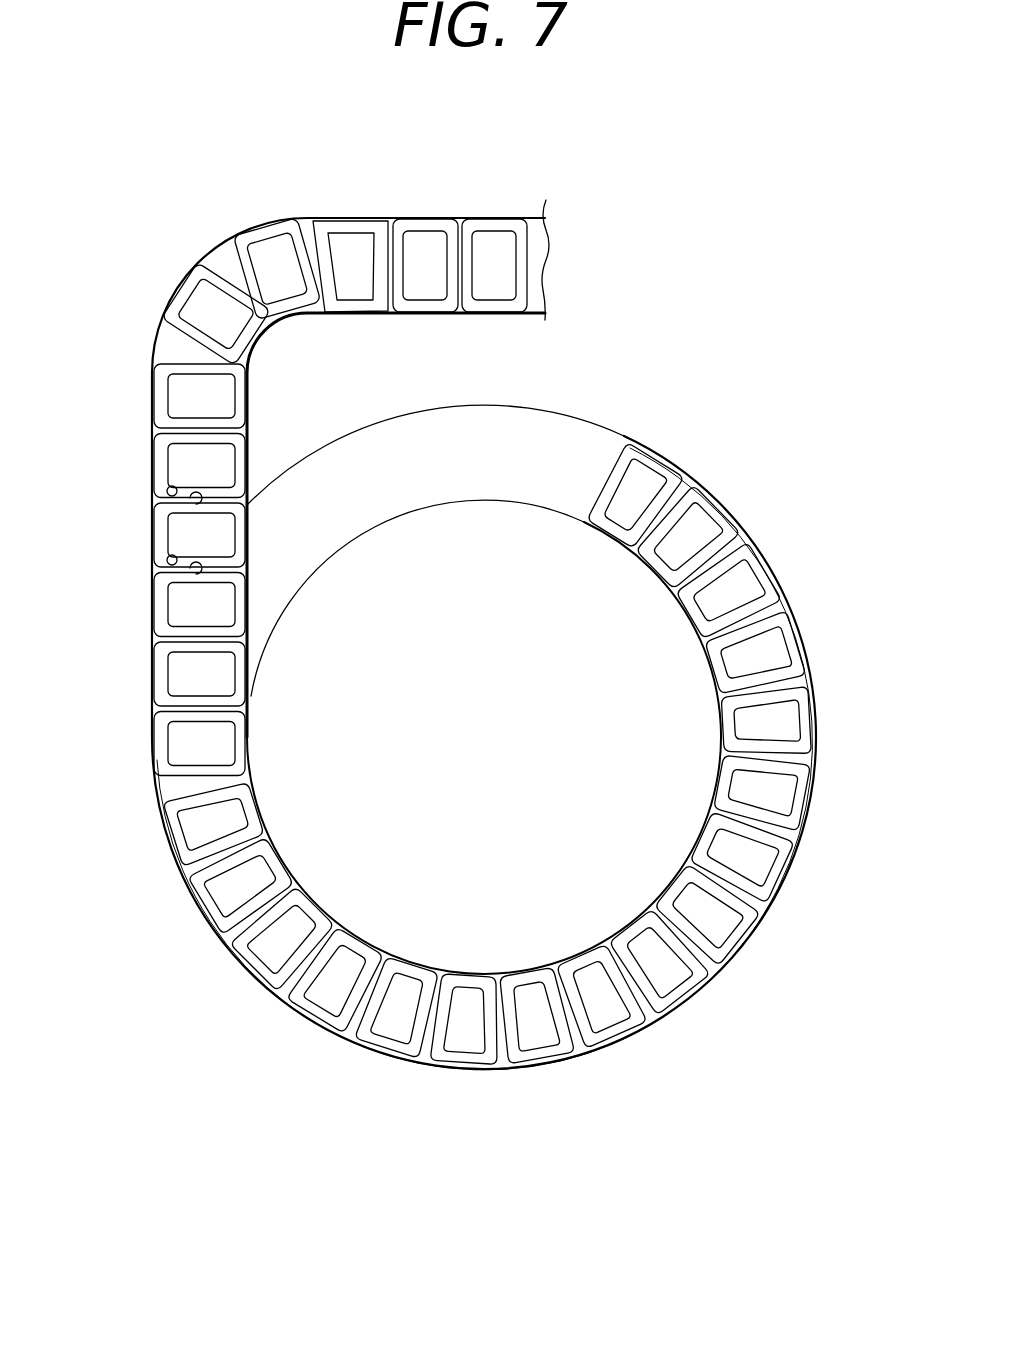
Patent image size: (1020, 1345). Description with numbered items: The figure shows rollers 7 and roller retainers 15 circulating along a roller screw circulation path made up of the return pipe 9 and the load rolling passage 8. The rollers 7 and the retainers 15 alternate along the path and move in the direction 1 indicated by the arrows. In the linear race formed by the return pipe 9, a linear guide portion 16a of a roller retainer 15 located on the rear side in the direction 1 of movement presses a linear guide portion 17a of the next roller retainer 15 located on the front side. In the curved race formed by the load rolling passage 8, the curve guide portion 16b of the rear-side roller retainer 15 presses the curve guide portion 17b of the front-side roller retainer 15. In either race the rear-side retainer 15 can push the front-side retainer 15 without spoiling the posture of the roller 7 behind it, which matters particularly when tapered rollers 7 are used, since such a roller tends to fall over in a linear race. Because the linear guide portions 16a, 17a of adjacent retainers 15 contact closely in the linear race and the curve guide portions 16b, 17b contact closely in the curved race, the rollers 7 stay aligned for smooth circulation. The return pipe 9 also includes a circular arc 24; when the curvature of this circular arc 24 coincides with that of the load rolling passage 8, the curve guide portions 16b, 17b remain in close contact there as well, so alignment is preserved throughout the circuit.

The direction of movement of the roller 1 is at (116, 405).
The roller 7 is at (742, 585).
The load rolling passage 8 is at (578, 440).
The return pipe 9 is at (251, 432).
The roller retainer 15 is at (808, 757).
The linear guide portion 16a is at (195, 503).
The curve guide portion 16b is at (252, 500).
The linear guide portion 17a is at (168, 490).
The curve guide portion 17b is at (250, 500).
The circular arc 24 is at (222, 265).